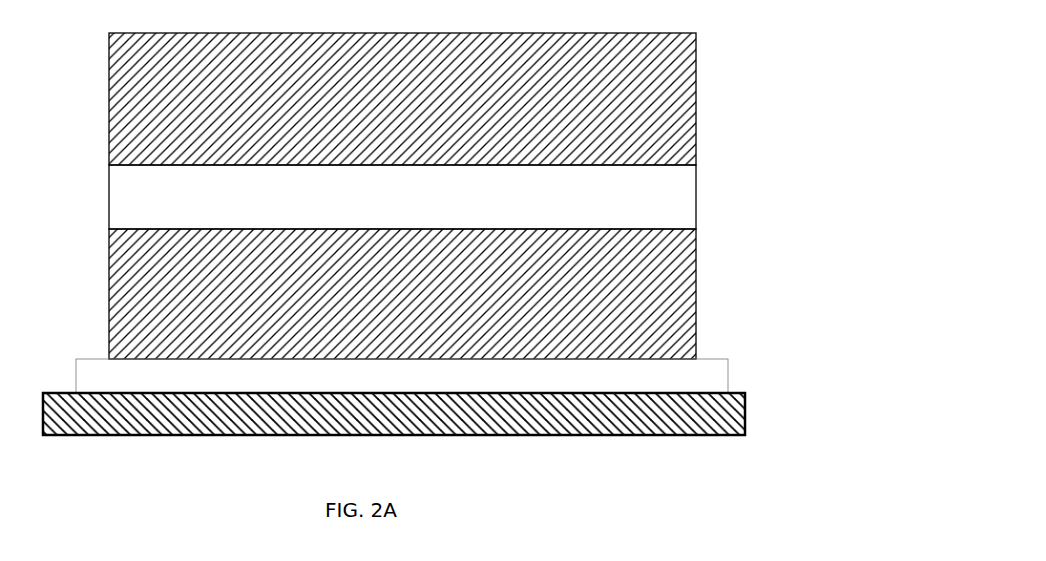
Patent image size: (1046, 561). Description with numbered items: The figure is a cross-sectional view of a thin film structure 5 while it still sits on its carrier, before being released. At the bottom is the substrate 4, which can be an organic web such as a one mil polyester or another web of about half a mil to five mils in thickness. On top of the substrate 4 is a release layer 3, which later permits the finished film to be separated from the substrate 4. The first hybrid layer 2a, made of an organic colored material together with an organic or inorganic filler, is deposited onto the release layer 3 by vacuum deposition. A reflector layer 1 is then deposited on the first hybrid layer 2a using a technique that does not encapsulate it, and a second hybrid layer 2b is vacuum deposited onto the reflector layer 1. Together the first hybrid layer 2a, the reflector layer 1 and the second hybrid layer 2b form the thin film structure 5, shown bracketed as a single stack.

The reflector layer 1 is at (696, 193).
The first hybrid layer 2a is at (481, 294).
The second hybrid layer 2b is at (696, 97).
The release layer 3 is at (728, 378).
The substrate 4 is at (745, 411).
The thin film structure 5 is at (535, 196).